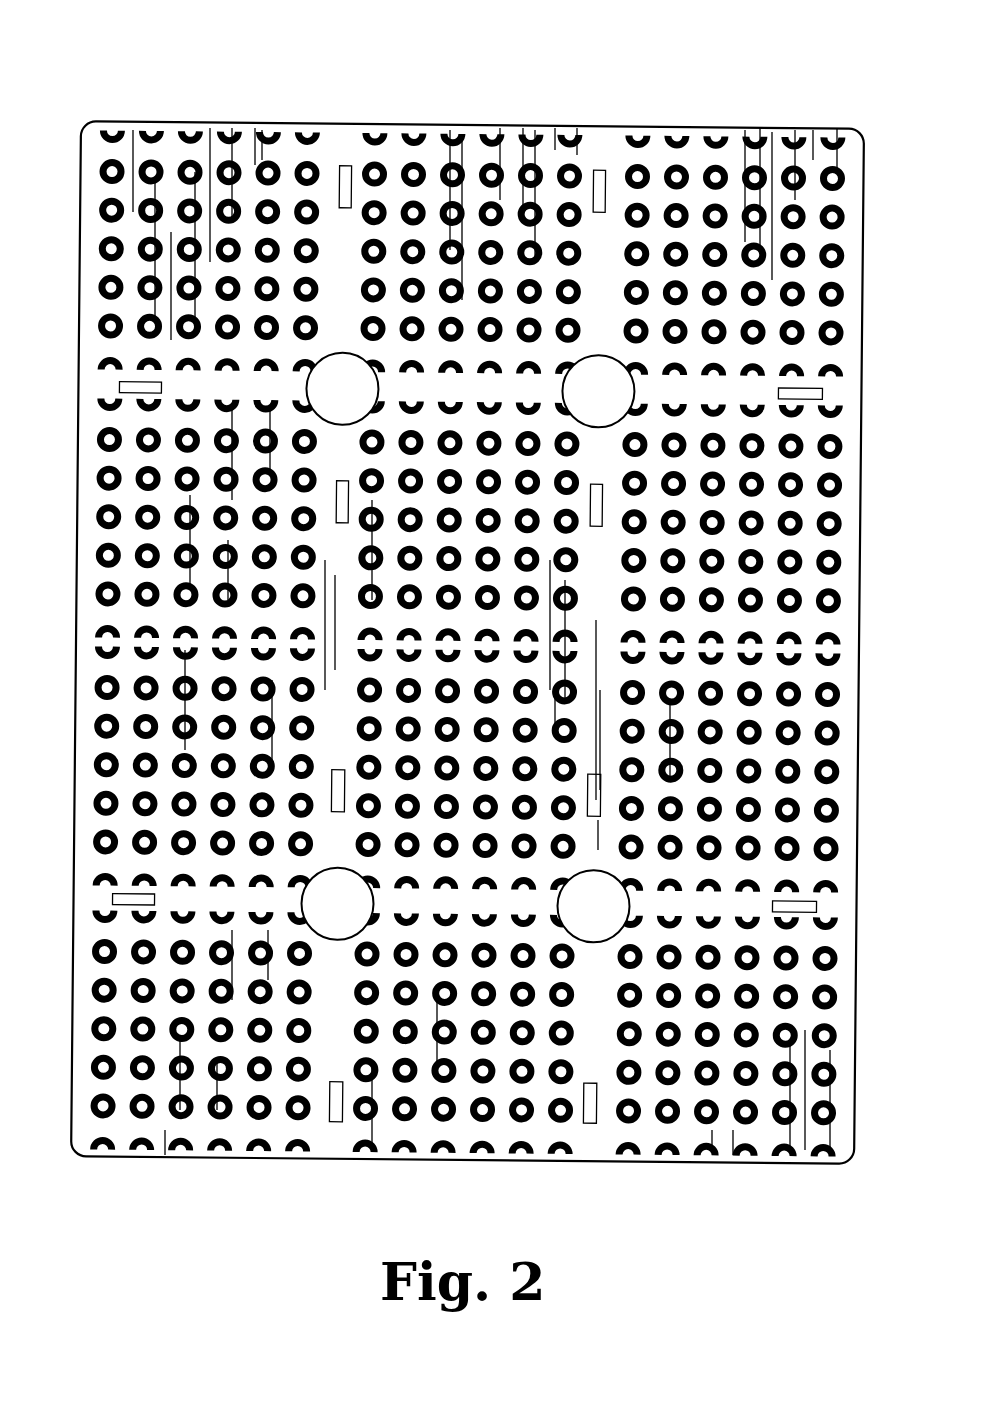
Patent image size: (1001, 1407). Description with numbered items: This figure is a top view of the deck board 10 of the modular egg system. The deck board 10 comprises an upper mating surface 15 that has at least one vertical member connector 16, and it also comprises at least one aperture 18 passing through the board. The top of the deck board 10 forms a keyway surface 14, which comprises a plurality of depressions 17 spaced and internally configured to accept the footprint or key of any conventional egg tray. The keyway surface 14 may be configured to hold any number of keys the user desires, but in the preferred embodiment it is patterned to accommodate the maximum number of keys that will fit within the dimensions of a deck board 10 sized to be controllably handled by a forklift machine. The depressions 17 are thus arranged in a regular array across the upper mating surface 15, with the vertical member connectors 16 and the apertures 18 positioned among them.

The deck board 10 is at (170, 72).
The keyway surface 14 is at (97, 370).
The upper mating surface 15 is at (836, 915).
The vertical member connector 16 is at (113, 900).
The depressions 17 is at (792, 422).
The aperture 18 is at (328, 928).